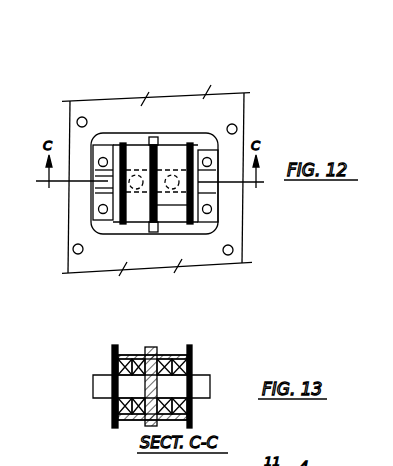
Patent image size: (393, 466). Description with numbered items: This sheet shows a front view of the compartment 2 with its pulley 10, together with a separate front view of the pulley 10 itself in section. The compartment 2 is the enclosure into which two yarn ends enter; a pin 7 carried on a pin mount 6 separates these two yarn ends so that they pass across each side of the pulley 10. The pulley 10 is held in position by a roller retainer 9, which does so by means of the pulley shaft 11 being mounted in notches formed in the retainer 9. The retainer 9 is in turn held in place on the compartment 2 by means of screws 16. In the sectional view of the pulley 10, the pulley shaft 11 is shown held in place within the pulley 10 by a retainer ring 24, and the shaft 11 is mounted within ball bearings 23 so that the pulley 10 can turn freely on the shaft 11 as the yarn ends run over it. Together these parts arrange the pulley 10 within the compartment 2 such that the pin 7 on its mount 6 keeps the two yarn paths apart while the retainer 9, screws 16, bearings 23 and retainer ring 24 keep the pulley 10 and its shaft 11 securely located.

In FIG. 12, the compartment 2 is at (243, 233).
In FIG. 12, the pin mount 6 is at (137, 189).
In FIG. 12, the pin 7 is at (176, 228).
In FIG. 12, the roller retainer 9 is at (103, 145).
In FIG. 12, the pulley 10 is at (172, 152).
In FIG. 13, the pulley 10 is at (192, 354).
In FIG. 12, the pulley shaft 11 is at (218, 185).
In FIG. 13, the pulley shaft 11 is at (96, 375).
In FIG. 12, the screws 16 is at (95, 210).
In FIG. 13, the ball bearings 23 is at (158, 363).
In FIG. 13, the retainer ring 24 is at (117, 386).